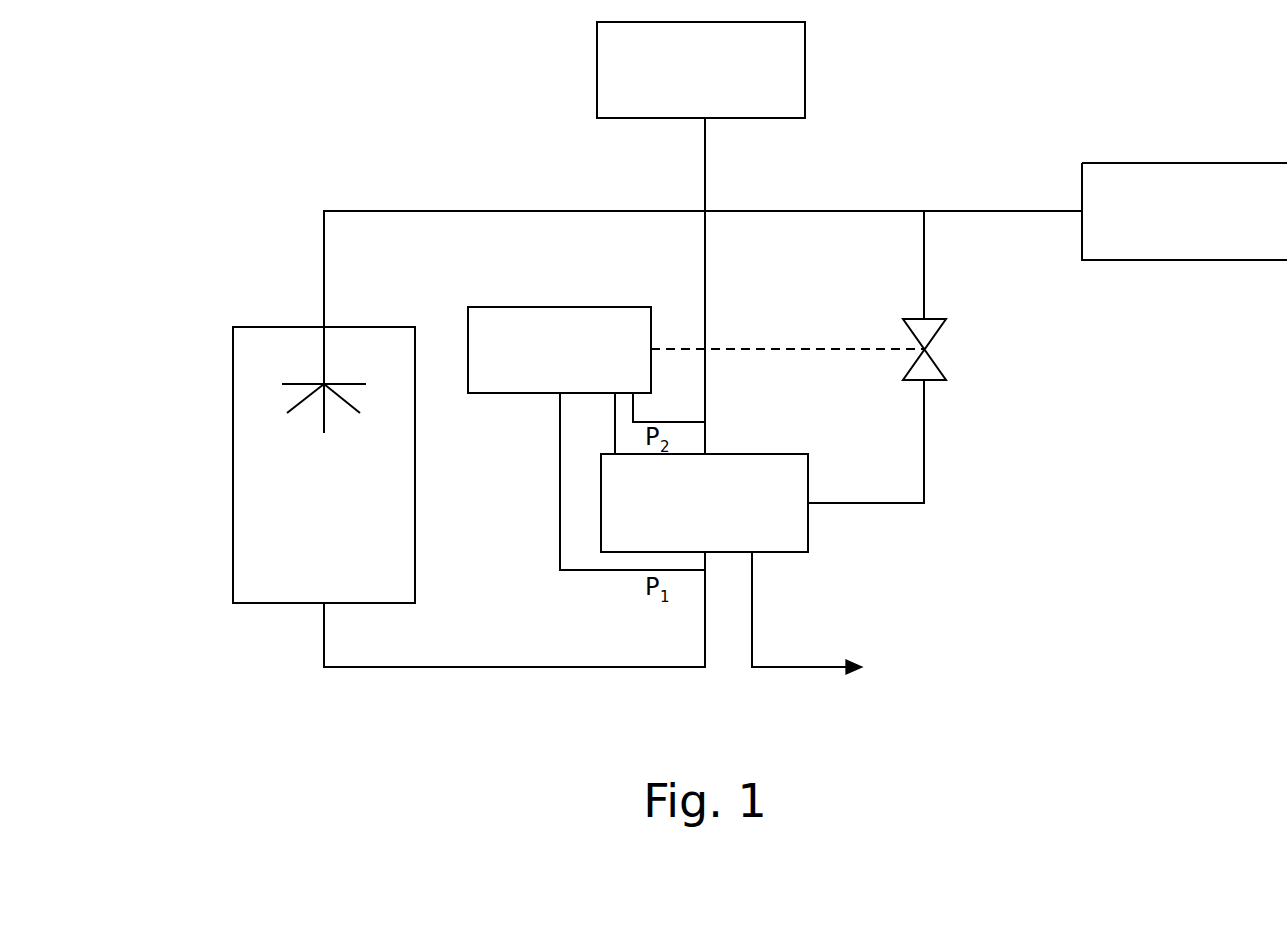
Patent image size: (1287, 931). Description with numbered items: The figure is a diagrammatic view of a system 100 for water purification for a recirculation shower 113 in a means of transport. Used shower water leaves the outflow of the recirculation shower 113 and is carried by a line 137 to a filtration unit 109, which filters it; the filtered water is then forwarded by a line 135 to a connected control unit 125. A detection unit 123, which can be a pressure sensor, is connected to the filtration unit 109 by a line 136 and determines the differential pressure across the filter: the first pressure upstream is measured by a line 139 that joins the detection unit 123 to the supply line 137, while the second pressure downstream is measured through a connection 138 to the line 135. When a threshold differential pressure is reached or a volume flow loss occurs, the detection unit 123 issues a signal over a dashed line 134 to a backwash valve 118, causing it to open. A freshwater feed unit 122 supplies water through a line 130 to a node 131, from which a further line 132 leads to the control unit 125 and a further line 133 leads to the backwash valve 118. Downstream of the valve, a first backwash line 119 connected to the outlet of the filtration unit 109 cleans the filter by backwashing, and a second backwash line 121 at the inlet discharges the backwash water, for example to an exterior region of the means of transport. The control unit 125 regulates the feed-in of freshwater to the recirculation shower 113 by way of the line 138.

The system for water purification 100 is at (196, 224).
The filtration unit 109 is at (681, 516).
The recirculation shower 113 is at (233, 455).
The backwash valve 118 is at (937, 334).
The first backwash line 119 is at (924, 416).
The second backwash line 121 is at (752, 612).
The freshwater feed unit 122 is at (1161, 226).
The detection unit 123 is at (531, 362).
The control unit 125 is at (673, 84).
The line 130 is at (995, 211).
The node 131 is at (924, 211).
The further line 132 is at (835, 211).
The further line 133 is at (924, 270).
The line 134 is at (820, 349).
The line 135 is at (705, 400).
The line 136 is at (615, 437).
The line 137 is at (493, 667).
The line 138 is at (445, 211).
The line 139 is at (600, 572).